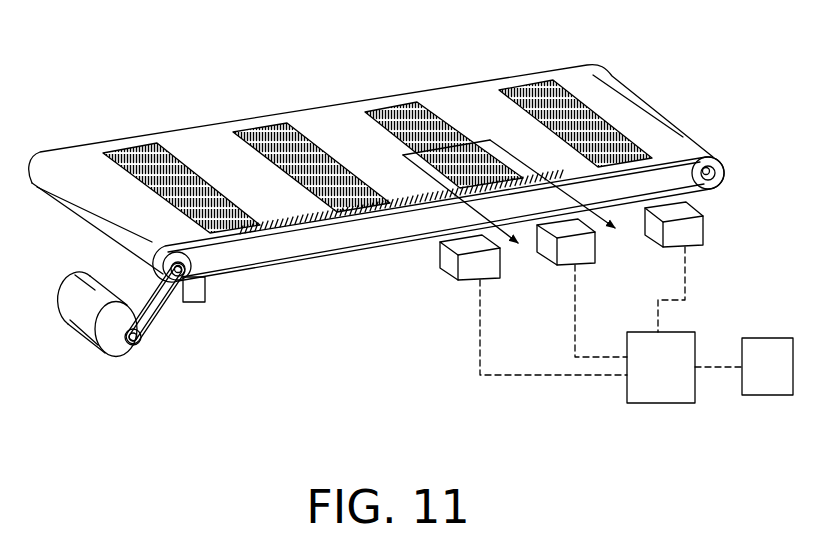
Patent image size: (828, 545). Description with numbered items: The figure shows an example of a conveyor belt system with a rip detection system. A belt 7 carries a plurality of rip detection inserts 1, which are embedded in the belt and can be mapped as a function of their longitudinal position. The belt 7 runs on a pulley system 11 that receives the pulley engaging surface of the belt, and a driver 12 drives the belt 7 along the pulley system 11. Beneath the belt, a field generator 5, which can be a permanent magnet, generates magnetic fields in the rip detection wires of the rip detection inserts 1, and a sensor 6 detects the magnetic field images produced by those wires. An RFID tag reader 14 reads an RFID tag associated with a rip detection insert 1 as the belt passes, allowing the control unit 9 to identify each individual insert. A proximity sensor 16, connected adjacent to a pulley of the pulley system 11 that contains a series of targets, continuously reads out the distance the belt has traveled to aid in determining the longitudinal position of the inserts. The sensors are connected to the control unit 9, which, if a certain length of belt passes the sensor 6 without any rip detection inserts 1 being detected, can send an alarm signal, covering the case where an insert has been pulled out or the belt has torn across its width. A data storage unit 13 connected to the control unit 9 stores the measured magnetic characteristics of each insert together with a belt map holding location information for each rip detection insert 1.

The rip detection insert 1 is at (136, 148).
The belt 7 is at (325, 125).
The pulley system 11 is at (158, 243).
The driver 12 is at (125, 350).
The proximity sensor 16 is at (200, 288).
The RFID tag reader 14 is at (466, 278).
The field generator 5 is at (560, 258).
The sensor 6 is at (653, 238).
The control unit 9 is at (628, 392).
The data storage unit 13 is at (766, 345).